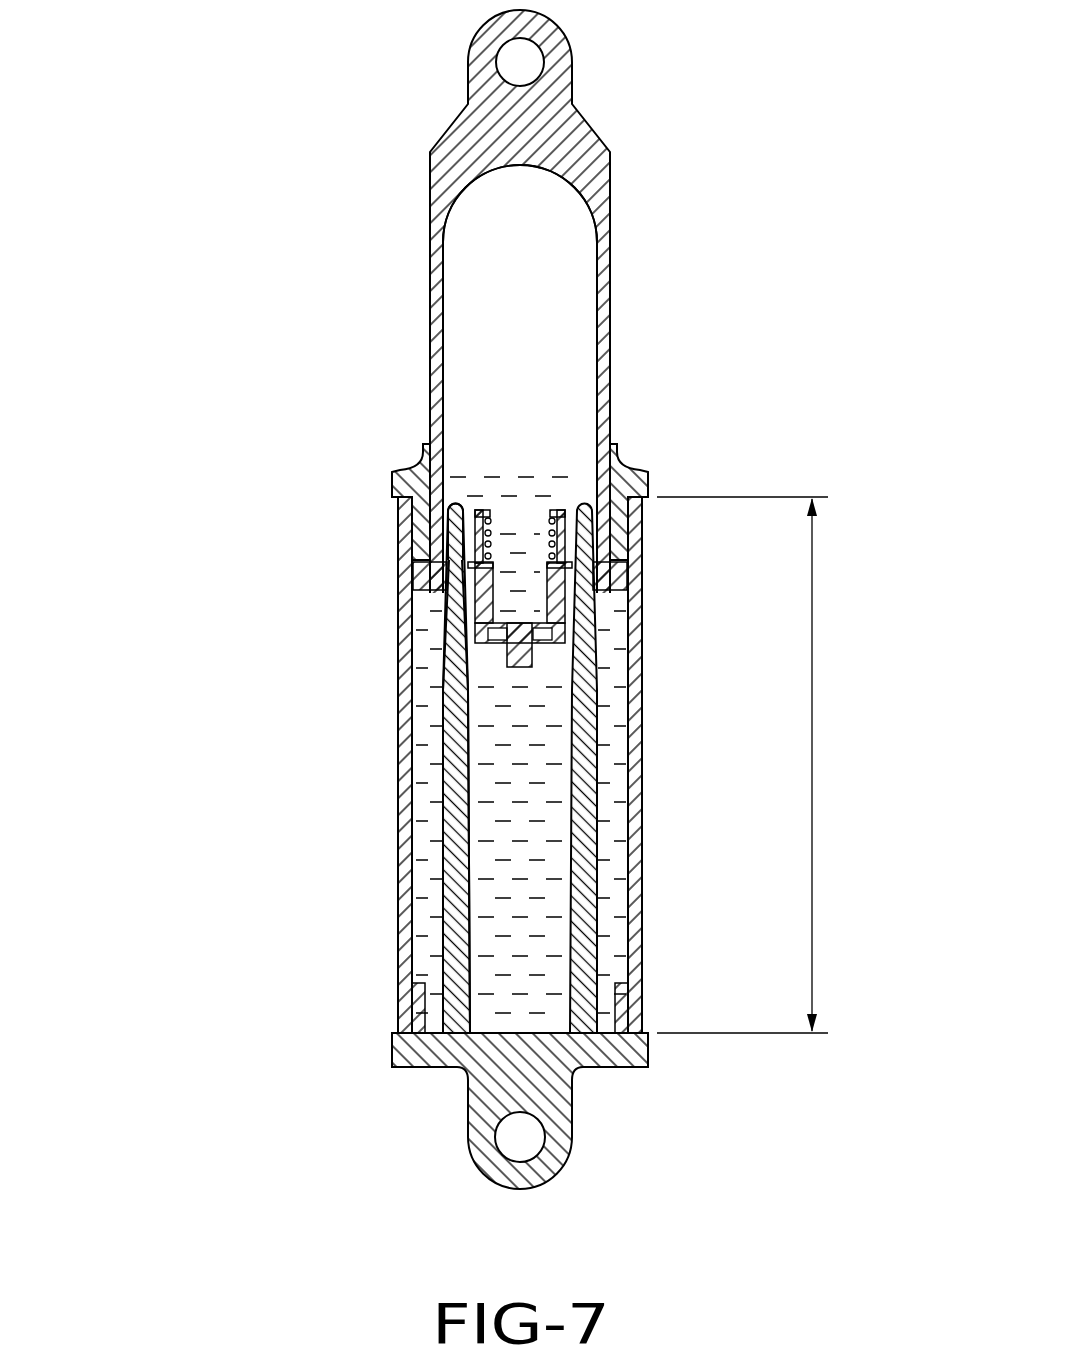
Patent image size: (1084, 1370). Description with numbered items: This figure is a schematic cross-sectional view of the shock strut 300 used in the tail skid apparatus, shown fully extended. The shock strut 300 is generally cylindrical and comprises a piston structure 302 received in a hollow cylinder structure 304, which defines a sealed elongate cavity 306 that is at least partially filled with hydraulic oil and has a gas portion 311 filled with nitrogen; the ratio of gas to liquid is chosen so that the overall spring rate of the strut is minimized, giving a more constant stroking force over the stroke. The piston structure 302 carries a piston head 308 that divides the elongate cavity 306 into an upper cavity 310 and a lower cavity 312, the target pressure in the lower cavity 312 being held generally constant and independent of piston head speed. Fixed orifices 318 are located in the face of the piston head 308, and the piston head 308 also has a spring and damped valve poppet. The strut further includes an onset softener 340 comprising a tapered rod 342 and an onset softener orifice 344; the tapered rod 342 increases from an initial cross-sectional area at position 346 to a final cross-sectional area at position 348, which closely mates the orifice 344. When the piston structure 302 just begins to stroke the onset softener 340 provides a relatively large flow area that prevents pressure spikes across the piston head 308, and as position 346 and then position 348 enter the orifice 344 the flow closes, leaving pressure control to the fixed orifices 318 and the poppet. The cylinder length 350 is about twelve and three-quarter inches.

The shock strut 300 is at (240, 618).
The piston structure 302 is at (430, 305).
The cylinder structure 304 is at (398, 935).
The elongate cavity 306 is at (560, 348).
The piston head 308 is at (568, 618).
The upper cavity 310 is at (553, 485).
The gas portion 311 is at (558, 255).
The lower cavity 312 is at (612, 908).
The fixed orifices 318 is at (540, 648).
The onset softener 340 is at (443, 767).
The tapered rod 342 is at (440, 805).
The onset softener orifice 344 is at (440, 572).
The initial cross-sectional area position 346 is at (445, 603).
The final cross-sectional area position 348 is at (440, 672).
The cylinder length 350 is at (812, 698).